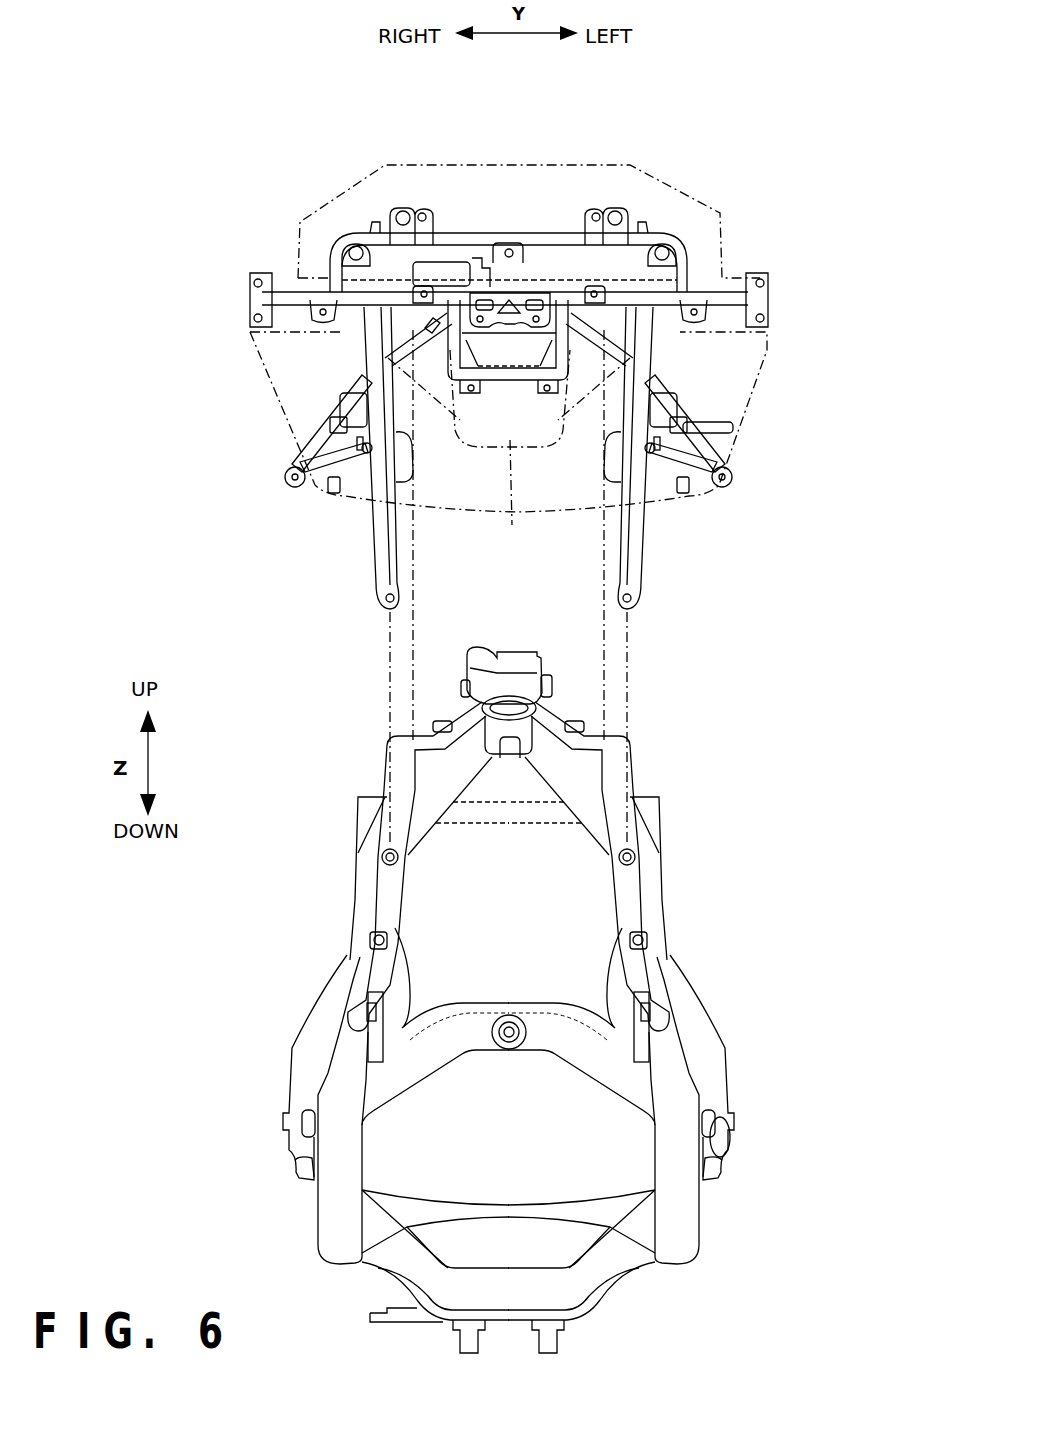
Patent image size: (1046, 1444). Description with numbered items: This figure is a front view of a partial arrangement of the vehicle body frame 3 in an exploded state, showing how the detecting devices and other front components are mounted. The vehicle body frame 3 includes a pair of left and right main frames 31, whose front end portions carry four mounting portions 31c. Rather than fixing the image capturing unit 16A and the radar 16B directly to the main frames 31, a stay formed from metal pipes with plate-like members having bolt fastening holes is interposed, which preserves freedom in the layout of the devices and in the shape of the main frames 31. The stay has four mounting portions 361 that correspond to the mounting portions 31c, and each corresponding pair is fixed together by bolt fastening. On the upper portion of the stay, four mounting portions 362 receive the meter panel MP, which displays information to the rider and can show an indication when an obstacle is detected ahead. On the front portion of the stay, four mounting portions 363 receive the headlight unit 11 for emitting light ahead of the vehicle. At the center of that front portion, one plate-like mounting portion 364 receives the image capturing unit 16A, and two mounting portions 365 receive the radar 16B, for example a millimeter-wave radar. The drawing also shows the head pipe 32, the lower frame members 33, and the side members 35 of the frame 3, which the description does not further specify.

The vehicle body frame 3 is at (822, 1234).
The headlight unit 11 is at (770, 352).
The image capturing unit 16A is at (500, 295).
The radar 16B is at (516, 500).
The meter panel MP is at (718, 212).
The main frames 31 is at (385, 783).
The mounting portions 31c is at (390, 735).
The head pipe 32 is at (499, 655).
The down frame 33 is at (318, 1192).
The pivot frame 35 is at (291, 1062).
The mounting portions 361 is at (405, 500).
The mounting portions 362 is at (402, 210).
The mounting portions 363 is at (323, 320).
The plate-like mounting portion 364 is at (500, 345).
The mounting portions 365 is at (470, 397).